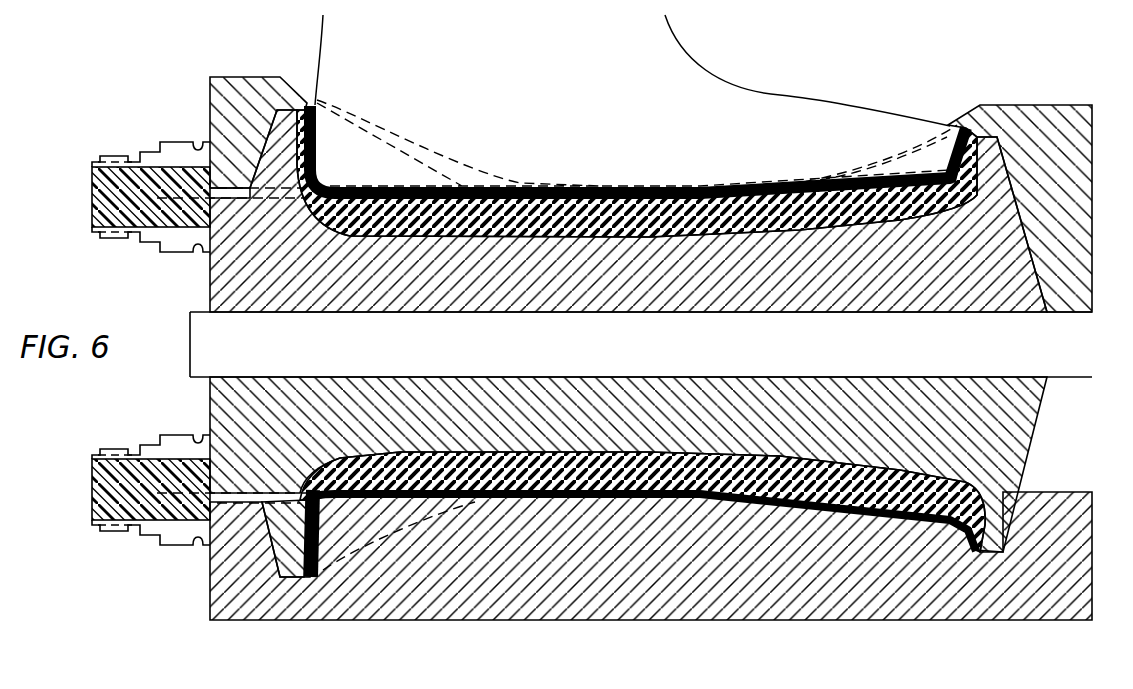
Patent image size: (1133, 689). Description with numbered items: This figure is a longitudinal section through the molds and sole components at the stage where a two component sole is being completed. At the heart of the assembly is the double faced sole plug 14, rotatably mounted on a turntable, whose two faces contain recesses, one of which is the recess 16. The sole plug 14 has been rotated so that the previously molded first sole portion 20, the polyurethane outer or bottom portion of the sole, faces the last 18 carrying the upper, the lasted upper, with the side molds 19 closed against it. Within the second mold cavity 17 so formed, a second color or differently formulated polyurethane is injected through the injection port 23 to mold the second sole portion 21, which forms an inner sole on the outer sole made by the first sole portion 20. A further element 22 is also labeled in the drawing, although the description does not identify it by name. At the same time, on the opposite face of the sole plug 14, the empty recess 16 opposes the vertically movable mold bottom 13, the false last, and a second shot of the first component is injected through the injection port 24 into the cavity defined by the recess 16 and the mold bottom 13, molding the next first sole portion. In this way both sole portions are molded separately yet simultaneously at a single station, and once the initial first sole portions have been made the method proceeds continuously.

The mold bottom 13 is at (875, 607).
The sole plug 14 is at (1013, 443).
The recess 16 is at (558, 450).
The second mold cavity 17 is at (895, 190).
The last 18 is at (768, 100).
The side molds 19 is at (1080, 223).
The first sole portion 20 is at (880, 223).
The second sole portion 21 is at (808, 193).
The lower liner 22 is at (705, 450).
The injection port 23 is at (223, 188).
The injection port 24 is at (190, 502).